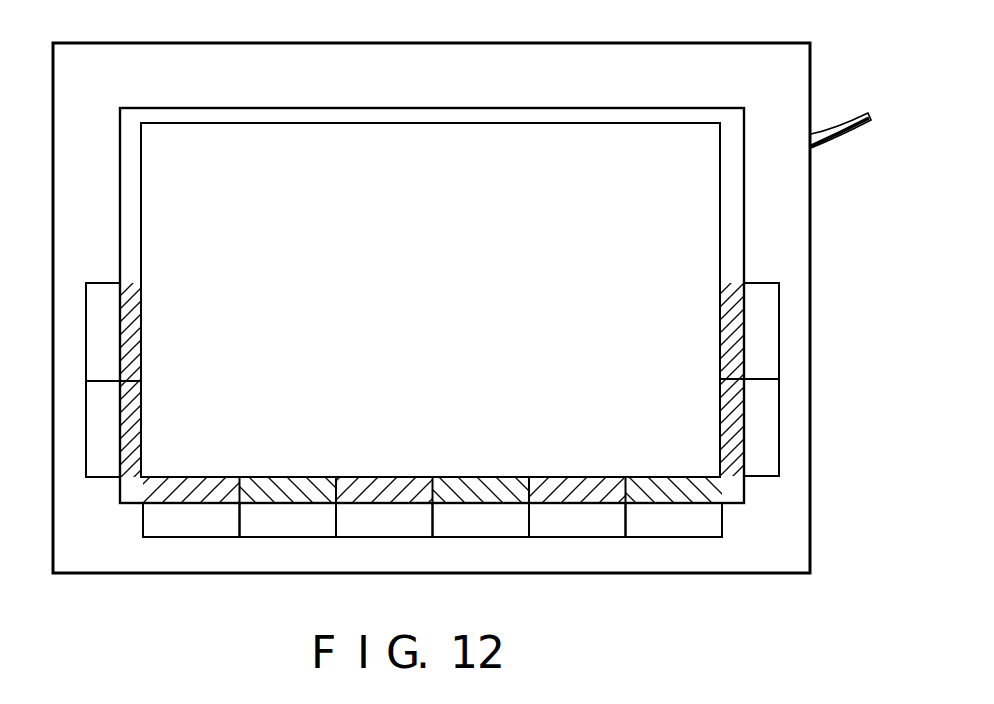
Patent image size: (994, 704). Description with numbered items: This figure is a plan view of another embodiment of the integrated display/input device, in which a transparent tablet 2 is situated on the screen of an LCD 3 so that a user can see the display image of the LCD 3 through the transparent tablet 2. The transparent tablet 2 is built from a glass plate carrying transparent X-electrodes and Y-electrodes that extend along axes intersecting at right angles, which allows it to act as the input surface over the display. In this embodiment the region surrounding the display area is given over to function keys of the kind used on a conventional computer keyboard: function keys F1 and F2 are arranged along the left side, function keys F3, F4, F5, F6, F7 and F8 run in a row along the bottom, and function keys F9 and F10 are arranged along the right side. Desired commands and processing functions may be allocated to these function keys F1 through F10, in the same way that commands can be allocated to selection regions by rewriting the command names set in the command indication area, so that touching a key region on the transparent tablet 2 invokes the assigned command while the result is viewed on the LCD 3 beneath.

The transparent tablet 2 is at (744, 250).
The LCD 3 is at (628, 123).
The function key F1 is at (113, 332).
The function key F2 is at (113, 429).
The function key F3 is at (191, 507).
The function key F4 is at (288, 507).
The function key F5 is at (384, 507).
The function key F6 is at (481, 507).
The function key F7 is at (577, 507).
The function key F8 is at (674, 507).
The function key F9 is at (749, 427).
The function key F10 is at (749, 331).